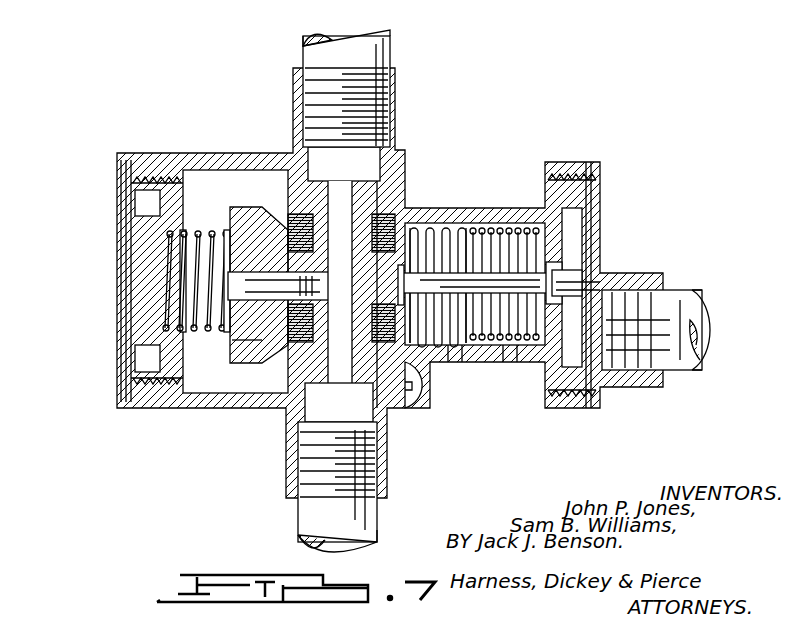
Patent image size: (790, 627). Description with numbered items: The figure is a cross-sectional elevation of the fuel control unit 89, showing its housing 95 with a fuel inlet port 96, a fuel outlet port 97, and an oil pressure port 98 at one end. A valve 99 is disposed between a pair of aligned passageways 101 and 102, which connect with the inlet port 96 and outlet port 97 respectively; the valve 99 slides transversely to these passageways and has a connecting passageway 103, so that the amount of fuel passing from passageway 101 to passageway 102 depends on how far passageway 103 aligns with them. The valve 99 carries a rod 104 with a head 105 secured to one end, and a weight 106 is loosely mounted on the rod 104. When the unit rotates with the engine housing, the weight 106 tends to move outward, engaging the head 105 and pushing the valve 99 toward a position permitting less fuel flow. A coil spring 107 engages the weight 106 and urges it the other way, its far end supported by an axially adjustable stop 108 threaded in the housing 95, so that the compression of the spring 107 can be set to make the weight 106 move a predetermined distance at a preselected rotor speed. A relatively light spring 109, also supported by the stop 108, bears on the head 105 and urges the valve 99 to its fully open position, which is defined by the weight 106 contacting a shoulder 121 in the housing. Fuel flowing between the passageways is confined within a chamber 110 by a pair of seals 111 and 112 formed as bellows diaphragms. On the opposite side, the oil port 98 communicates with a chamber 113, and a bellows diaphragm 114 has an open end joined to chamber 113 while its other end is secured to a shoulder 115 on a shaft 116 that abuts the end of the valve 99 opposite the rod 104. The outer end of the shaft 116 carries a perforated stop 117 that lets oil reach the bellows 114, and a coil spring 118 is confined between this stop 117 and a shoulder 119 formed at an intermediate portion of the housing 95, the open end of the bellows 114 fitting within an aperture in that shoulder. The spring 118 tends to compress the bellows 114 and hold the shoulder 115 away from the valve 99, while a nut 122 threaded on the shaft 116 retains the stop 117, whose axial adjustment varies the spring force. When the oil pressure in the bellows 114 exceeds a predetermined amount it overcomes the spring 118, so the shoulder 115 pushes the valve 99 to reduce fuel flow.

The fuel control unit 89 is at (416, 172).
The housing 95 is at (425, 374).
The fuel inlet port 96 is at (300, 470).
The fuel outlet port 97 is at (388, 100).
The oil pressure port 98 is at (628, 300).
The valve 99 is at (409, 232).
The passageway 101 is at (300, 340).
The passageway 102 is at (344, 265).
The connecting passageway 103 is at (266, 336).
The rod 104 is at (251, 240).
The head 105 is at (225, 234).
The weight 106 is at (238, 332).
The coil spring 107 is at (170, 230).
The axially adjustable stop 108 is at (140, 325).
The light spring 109 is at (168, 262).
The chamber 110 is at (400, 175).
The seal 111 is at (339, 402).
The seal 112 is at (294, 224).
The chamber 113 is at (566, 200).
The bellows diaphragm 114 is at (455, 228).
The shoulder 115 is at (475, 285).
The shaft 116 is at (500, 232).
The stop 117 is at (552, 232).
The coil spring 118 is at (512, 350).
The shoulder 119 is at (455, 350).
The shoulder 121 is at (294, 168).
The nut 122 is at (556, 270).